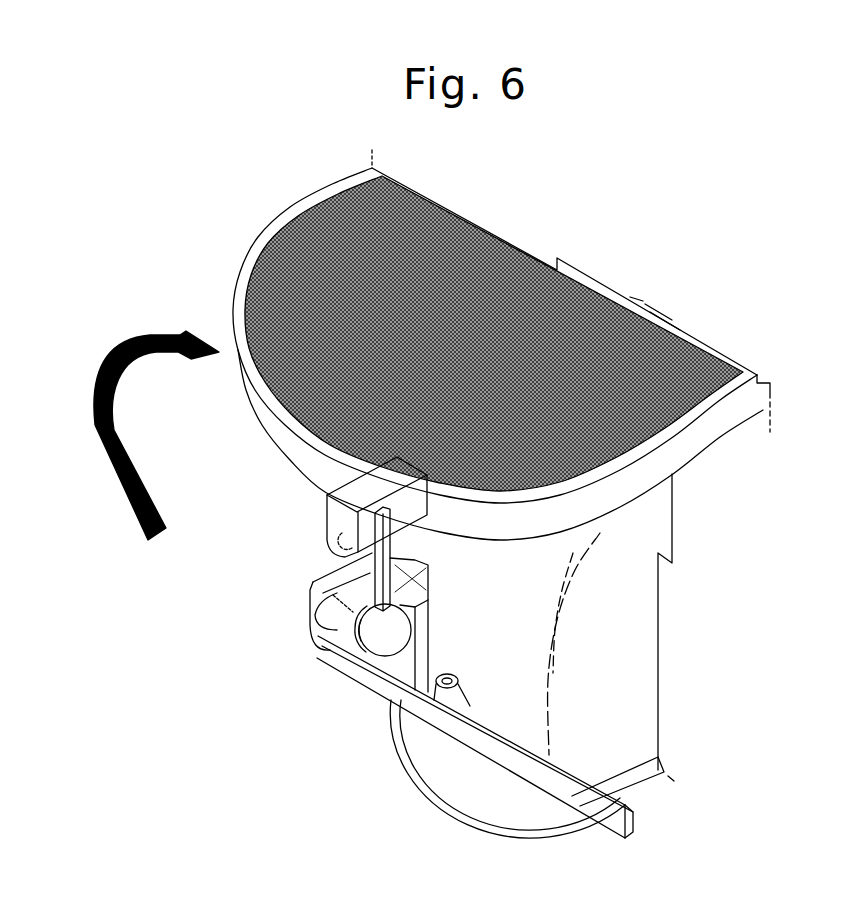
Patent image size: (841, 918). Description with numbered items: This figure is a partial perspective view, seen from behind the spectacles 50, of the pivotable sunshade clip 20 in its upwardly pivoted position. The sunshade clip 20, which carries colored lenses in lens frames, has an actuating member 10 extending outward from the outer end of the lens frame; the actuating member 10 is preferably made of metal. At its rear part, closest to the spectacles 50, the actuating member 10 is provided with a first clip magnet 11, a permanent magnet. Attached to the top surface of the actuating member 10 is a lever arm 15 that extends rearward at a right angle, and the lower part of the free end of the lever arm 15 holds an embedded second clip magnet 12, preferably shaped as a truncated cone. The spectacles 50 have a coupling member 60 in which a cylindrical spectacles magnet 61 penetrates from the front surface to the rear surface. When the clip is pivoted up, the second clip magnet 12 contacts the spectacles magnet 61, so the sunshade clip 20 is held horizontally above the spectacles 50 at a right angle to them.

The sunshade clip 20 is at (731, 339).
The actuating member 10 is at (375, 480).
The first clip magnet 11 is at (340, 530).
The lever arm 15 is at (388, 563).
The second clip magnet 12 is at (396, 633).
The coupling member 60 is at (313, 600).
The spectacles magnet 61 is at (335, 627).
The spectacles 50 is at (680, 698).